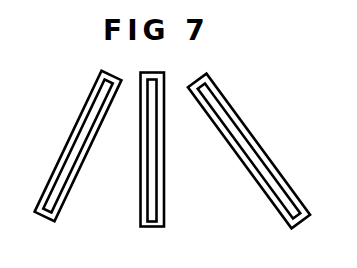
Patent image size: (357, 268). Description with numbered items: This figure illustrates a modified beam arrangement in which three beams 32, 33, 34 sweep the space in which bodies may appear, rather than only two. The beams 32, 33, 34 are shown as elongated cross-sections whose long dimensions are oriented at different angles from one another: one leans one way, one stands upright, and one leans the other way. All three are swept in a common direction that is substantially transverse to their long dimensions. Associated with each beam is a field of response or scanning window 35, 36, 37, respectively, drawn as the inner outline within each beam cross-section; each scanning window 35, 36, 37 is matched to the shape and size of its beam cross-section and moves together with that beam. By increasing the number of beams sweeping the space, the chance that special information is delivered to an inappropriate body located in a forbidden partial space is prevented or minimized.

The beam 32 is at (72, 159).
The beam 33 is at (152, 166).
The beam 34 is at (254, 156).
The field of response or scanning window 35 is at (80, 128).
The field of response or scanning window 36 is at (147, 209).
The field of response or scanning window 37 is at (279, 204).